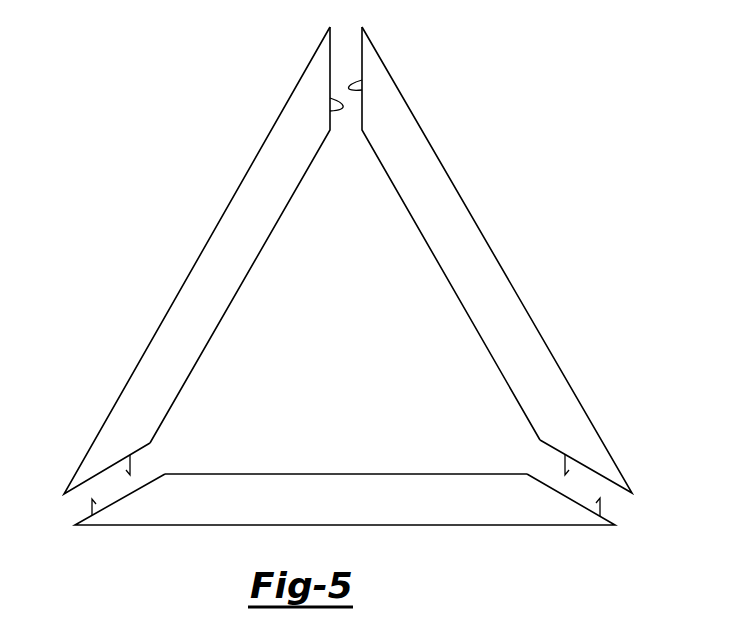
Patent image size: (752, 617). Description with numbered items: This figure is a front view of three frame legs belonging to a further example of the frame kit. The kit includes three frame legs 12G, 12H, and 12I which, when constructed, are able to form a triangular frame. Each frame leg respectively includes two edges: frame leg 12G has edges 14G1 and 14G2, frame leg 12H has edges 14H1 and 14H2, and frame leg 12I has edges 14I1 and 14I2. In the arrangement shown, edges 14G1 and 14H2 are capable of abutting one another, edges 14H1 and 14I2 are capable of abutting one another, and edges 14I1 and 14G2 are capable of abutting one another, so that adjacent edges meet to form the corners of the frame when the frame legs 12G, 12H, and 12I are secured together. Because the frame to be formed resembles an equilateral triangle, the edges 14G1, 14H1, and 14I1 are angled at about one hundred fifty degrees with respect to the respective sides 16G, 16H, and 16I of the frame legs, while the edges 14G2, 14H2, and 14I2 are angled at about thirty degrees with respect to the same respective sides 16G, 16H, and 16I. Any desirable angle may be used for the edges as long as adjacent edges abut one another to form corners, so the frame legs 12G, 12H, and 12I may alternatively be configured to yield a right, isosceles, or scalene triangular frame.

The frame leg 12H is at (197, 260).
The frame leg 12G is at (497, 260).
The frame leg 12I is at (345, 493).
The side 16H is at (242, 285).
The side 16G is at (508, 217).
The side 16I is at (345, 474).
The edge 14H1 is at (128, 472).
The edge 14H2 is at (330, 98).
The edge 14G1 is at (362, 80).
The edge 14G2 is at (565, 475).
The edge 14I1 is at (600, 498).
The edge 14I2 is at (93, 500).